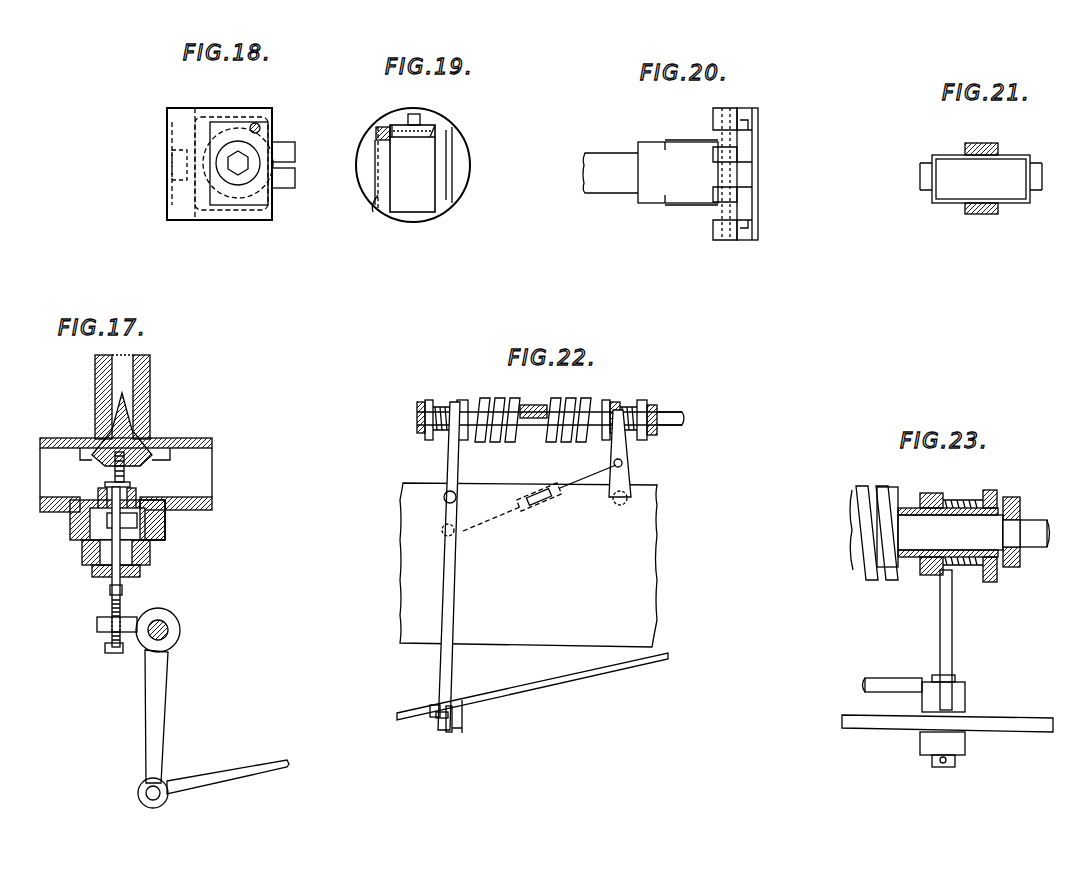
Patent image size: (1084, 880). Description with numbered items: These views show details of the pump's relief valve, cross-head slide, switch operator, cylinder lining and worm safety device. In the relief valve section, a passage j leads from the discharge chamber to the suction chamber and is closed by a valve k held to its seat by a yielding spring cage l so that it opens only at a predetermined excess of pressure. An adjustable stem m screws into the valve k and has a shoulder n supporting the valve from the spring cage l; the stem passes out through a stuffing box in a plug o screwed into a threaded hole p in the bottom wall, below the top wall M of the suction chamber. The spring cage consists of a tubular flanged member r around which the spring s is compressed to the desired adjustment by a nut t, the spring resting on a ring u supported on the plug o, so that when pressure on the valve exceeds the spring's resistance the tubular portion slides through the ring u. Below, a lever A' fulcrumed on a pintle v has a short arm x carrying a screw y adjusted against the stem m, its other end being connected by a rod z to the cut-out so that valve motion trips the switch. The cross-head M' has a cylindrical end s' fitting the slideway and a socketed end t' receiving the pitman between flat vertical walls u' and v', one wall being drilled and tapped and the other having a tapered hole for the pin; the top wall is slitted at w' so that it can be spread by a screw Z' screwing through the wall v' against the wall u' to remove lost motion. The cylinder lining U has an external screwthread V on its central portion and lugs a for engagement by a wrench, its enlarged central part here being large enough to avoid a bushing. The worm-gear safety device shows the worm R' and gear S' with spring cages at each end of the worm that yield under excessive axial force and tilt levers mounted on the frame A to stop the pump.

In FIG. 18, the cylindrical end s' is at (191, 152).
In FIG. 19, the cylindrical end s' is at (356, 168).
In FIG. 18, the screw Z' is at (257, 108).
In FIG. 19, the screw Z' is at (397, 143).
In FIG. 18, the cross-head M' is at (231, 177).
In FIG. 19, the cross-head M' is at (414, 172).
In FIG. 19, the slit w' is at (404, 104).
In FIG. 19, the socketed end t' is at (412, 168).
In FIG. 19, the drilled and tapped wall u' is at (470, 165).
In FIG. 19, the tapered-hole wall v' is at (358, 209).
In FIG. 20, the rod z is at (597, 195).
In FIG. 17, the rod z is at (222, 775).
In FIG. 21, the lugs a is at (920, 176).
In FIG. 21, the cylinder U is at (981, 179).
In FIG. 21, the external screwthread V is at (981, 189).
In FIG. 17, the passage j is at (125, 372).
In FIG. 17, the valve k is at (135, 462).
In FIG. 17, the top wall of suction chamber M is at (126, 461).
In FIG. 17, the shoulder n is at (105, 484).
In FIG. 17, the spring cage l is at (137, 490).
In FIG. 17, the tubular flanged member r is at (72, 512).
In FIG. 17, the spring s is at (97, 550).
In FIG. 17, the plug o is at (92, 570).
In FIG. 17, the threaded hole p is at (165, 530).
In FIG. 17, the ring u is at (182, 520).
In FIG. 17, the nut t is at (122, 524).
In FIG. 17, the adjustable stem m is at (110, 592).
In FIG. 17, the short arm x is at (97, 624).
In FIG. 17, the screw y is at (108, 653).
In FIG. 17, the pintle v is at (166, 629).
In FIG. 17, the lever A' is at (166, 729).
In FIG. 22, the cam discs S' is at (549, 404).
In FIG. 22, the cam discs R' is at (565, 404).
In FIG. 23, the cam discs R' is at (861, 533).
In FIG. 22, the frame A is at (528, 565).
In FIG. 23, the frame A is at (947, 734).